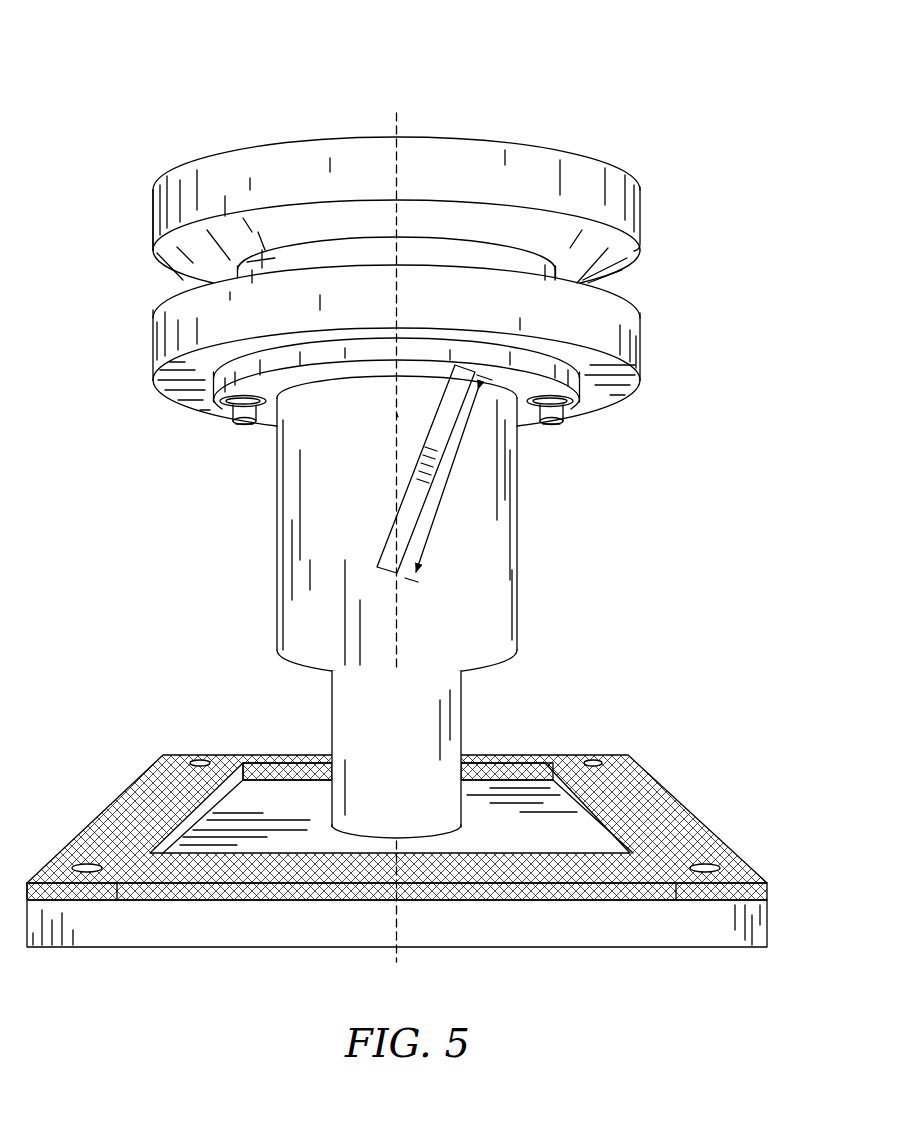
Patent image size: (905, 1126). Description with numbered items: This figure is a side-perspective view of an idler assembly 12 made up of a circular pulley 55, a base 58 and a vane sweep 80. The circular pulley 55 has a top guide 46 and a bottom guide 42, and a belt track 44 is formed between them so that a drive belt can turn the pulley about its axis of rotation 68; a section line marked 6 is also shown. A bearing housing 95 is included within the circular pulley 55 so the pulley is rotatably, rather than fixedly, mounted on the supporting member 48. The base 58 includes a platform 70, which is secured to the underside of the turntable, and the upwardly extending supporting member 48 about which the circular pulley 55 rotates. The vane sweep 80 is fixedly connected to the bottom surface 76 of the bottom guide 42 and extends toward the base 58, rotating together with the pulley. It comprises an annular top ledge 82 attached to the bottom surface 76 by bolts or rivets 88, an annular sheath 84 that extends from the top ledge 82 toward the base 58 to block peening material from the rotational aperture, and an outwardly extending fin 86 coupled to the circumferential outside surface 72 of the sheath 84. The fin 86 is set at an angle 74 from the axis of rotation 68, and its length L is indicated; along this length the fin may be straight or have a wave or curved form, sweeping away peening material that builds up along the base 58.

The idler assembly 12 is at (148, 93).
The section line 6- 6 is at (411, 91).
The top guide 46 is at (500, 143).
The circular pulley 55 is at (129, 210).
The bearing housing 95 is at (250, 258).
The belt track 44 is at (550, 245).
The bottom guide 42 is at (631, 338).
The bottom surface 76 is at (612, 388).
The annular top ledge 82 is at (232, 405).
The bolts or rivets 88 is at (247, 423).
The circumferential outside surface 72 is at (497, 612).
The annular sheath 84 is at (297, 530).
The vane sweep 80 is at (534, 468).
The outwardly extending fin 86 is at (415, 495).
The angle 74 is at (419, 428).
The length of the fin L is at (427, 545).
The supporting member 48 is at (430, 690).
The base 58 is at (222, 720).
The platform 70 is at (548, 805).
The axis of rotation 68 is at (410, 938).